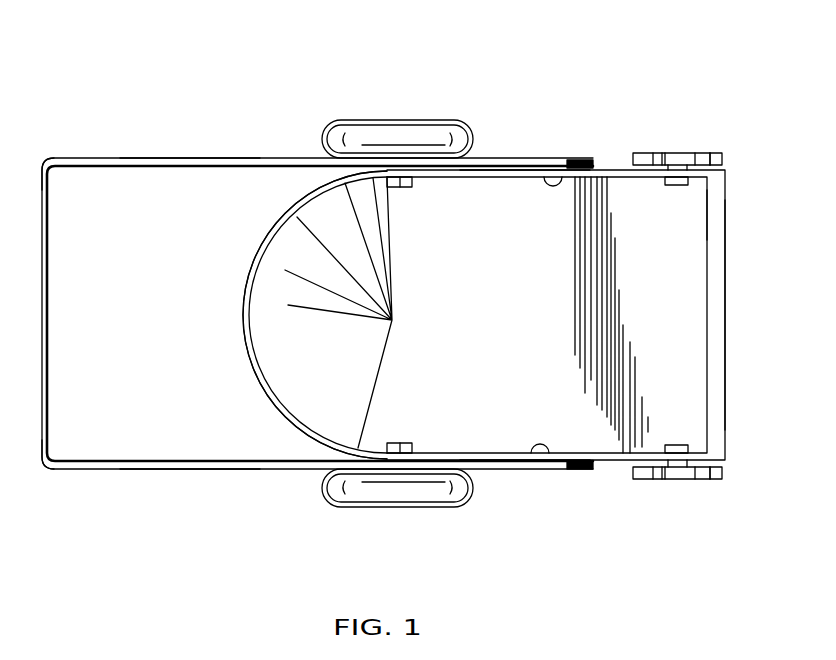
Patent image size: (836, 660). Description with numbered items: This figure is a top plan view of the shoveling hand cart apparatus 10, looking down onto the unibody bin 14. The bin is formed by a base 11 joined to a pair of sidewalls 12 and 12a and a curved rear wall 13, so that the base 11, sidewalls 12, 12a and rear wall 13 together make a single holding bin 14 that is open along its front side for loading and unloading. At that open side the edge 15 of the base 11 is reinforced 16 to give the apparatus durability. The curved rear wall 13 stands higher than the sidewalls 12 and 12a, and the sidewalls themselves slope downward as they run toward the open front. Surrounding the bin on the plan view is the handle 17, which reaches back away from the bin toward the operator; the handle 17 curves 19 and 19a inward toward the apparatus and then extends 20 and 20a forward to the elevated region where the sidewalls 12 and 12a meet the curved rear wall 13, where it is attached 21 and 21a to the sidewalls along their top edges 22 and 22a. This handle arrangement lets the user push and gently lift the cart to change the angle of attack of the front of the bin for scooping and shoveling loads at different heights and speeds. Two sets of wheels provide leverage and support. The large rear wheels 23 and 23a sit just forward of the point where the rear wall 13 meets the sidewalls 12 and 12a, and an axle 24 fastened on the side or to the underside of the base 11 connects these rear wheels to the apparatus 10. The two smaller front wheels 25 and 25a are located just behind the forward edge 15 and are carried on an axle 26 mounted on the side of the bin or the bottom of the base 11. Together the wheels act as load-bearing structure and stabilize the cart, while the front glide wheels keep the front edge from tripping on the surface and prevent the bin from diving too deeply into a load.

The shoveling hand cart apparatus 10 is at (290, 94).
The base 11 is at (680, 366).
The sidewall 12 is at (625, 470).
The sidewall 12a is at (625, 167).
The curved rear wall 13 is at (245, 318).
The unibody bin 14 is at (535, 262).
The edge 15 is at (680, 210).
The reinforcement 16 is at (715, 313).
The handle 17 is at (50, 354).
The handle curve 19 is at (45, 470).
The handle curve 19a is at (48, 156).
The handle extension 20 is at (190, 470).
The handle extension 20a is at (188, 157).
The handle attachment 21 is at (510, 466).
The handle attachment 21a is at (522, 165).
The top edge of sidewall 22 is at (542, 462).
The top edge of sidewall 22a is at (553, 172).
The rear wheel 23 is at (375, 506).
The rear wheel 23a is at (372, 120).
The rear axle 24 is at (400, 188).
The front wheel 25 is at (712, 480).
The front wheel 25a is at (712, 155).
The front axle 26 is at (672, 153).